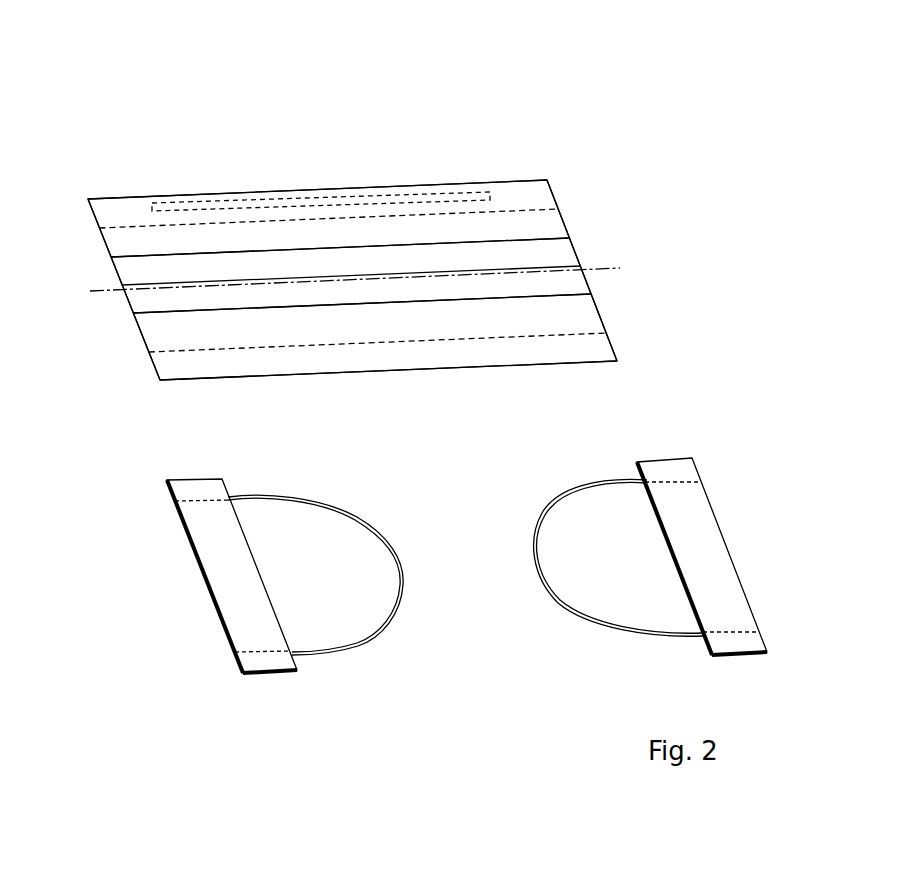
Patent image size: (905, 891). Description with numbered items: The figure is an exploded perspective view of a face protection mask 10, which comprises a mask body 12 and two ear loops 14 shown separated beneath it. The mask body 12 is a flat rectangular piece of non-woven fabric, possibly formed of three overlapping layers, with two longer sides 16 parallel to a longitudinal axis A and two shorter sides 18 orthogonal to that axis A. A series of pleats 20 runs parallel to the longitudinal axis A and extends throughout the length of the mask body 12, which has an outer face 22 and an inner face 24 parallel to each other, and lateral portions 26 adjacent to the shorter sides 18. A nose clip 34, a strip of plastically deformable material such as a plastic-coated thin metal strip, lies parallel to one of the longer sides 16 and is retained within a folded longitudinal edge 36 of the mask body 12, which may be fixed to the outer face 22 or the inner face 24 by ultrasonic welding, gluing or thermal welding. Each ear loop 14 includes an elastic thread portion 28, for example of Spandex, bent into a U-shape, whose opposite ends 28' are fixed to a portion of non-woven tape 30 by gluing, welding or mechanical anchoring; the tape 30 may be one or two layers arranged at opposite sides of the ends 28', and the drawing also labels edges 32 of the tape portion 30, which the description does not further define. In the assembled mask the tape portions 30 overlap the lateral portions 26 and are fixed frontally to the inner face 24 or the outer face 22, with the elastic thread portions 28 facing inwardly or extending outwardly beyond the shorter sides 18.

The face protection mask 10 is at (578, 122).
The mask body 12 is at (357, 168).
The ear loop 14 is at (160, 460).
The longer side 16 is at (443, 182).
The shorter side 18 is at (103, 238).
The pleat 20 is at (553, 238).
The outer face 22 is at (237, 238).
The inner face 24 is at (145, 332).
The lateral portion 26 is at (130, 273).
The elastic thread portion 28 is at (430, 590).
The end of elastic thread portion 28' is at (430, 590).
The tape portion 30 is at (195, 565).
The strip edge 32 is at (283, 636).
The nose clip 34 is at (278, 187).
The folded longitudinal edge 36 is at (137, 220).
The longitudinal axis A is at (597, 270).